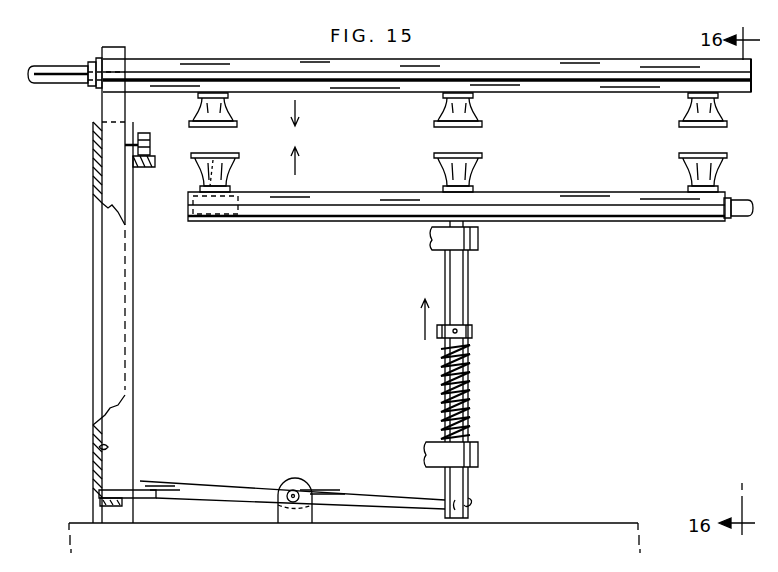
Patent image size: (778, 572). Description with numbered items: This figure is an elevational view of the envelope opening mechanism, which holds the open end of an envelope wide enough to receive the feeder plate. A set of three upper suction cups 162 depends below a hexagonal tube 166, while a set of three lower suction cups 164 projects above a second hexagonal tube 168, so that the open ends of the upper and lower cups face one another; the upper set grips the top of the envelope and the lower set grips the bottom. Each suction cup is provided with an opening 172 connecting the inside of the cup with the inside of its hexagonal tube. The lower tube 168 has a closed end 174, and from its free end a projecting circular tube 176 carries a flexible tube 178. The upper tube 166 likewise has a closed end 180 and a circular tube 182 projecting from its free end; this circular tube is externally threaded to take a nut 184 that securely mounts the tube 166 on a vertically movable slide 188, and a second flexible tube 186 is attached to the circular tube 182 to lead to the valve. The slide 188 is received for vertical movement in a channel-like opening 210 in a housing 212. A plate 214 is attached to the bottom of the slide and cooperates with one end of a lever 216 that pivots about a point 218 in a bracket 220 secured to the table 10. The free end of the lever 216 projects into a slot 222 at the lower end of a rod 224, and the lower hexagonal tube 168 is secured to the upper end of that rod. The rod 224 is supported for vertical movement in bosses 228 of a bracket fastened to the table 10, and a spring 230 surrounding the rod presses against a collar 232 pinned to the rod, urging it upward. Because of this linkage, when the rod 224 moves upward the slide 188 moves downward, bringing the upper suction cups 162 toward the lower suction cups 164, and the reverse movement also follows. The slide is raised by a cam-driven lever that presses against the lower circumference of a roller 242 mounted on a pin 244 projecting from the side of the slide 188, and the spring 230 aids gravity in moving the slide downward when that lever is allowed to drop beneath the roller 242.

The table 10 is at (553, 523).
The upper suction cups 162 is at (202, 112).
The lower suction cups 164 is at (198, 173).
The hexagonal tube 166 is at (558, 63).
The second hexagonal tube 168 is at (323, 195).
The opening 172 is at (211, 158).
The closed end 174 is at (192, 198).
The projecting circular tube 176 is at (728, 218).
The flexible tube 178 is at (741, 200).
The closed end 180 is at (751, 92).
The circular tube 182 is at (90, 62).
The nut 184 is at (98, 58).
The second flexible tube 186 is at (50, 64).
The slide 188 is at (108, 104).
The channel-like opening 210 is at (99, 447).
The housing 212 is at (118, 297).
The plate 214 is at (134, 490).
The lever 216 is at (217, 486).
The pivot point 218 is at (298, 492).
The bracket 220 is at (289, 480).
The slot 222 is at (464, 498).
The rod 224 is at (458, 478).
The bosses 228 is at (455, 240).
The spring 230 is at (470, 352).
The collar 232 is at (470, 328).
The roller 242 is at (149, 142).
The pin 244 is at (134, 149).